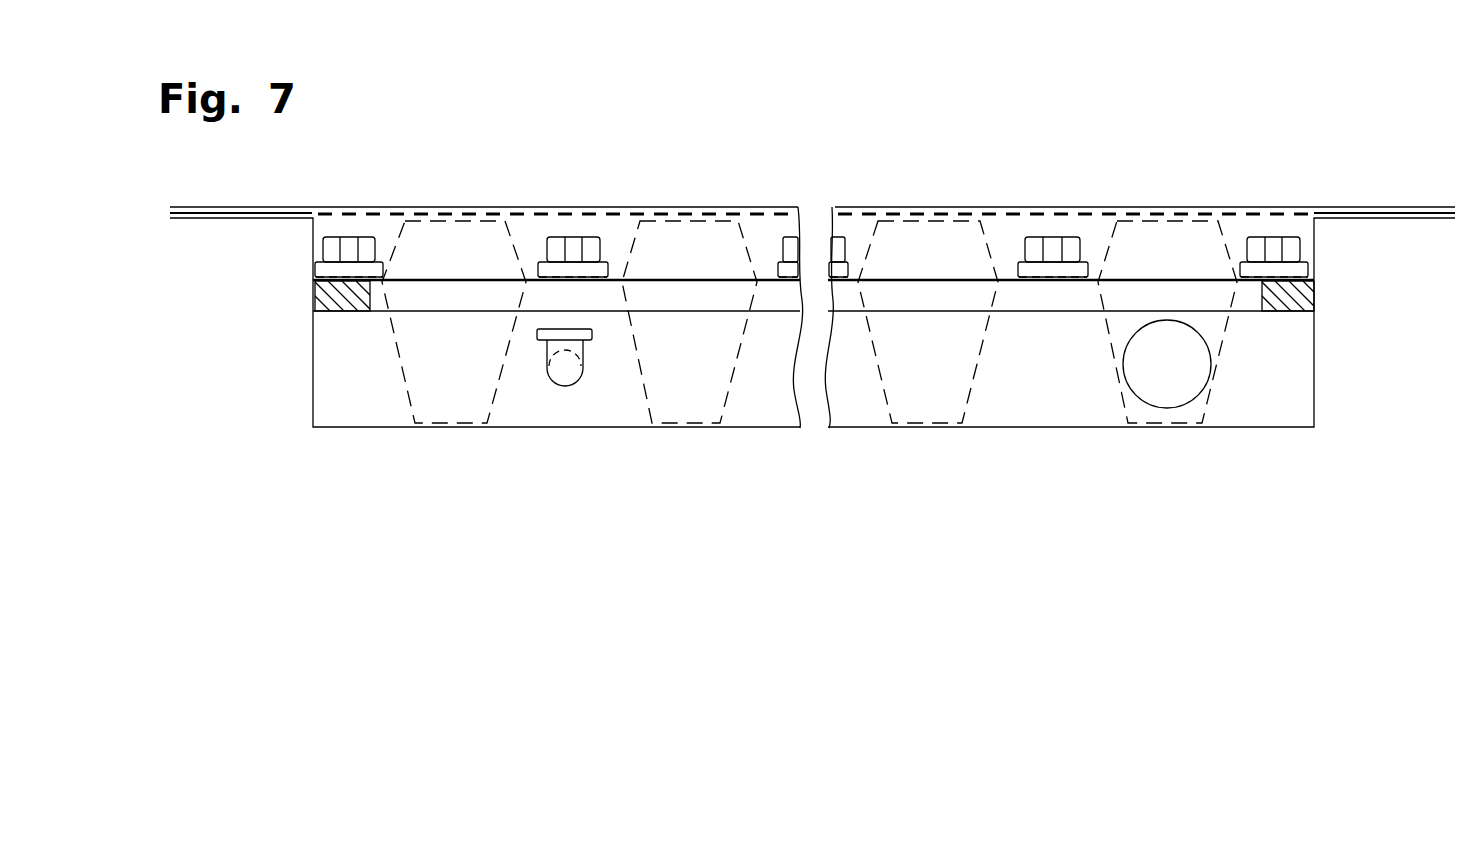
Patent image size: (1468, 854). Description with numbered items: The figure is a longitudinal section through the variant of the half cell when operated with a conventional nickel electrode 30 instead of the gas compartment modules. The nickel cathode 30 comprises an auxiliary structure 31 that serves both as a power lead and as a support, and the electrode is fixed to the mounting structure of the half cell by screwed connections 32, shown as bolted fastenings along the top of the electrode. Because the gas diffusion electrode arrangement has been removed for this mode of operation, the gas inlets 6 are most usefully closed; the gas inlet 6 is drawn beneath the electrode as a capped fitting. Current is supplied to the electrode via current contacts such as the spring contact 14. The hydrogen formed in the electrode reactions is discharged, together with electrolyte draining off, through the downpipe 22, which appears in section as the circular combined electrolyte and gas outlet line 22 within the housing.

The gas inlet 6 is at (568, 378).
The spring contact 14 is at (1066, 207).
The combined electrolyte and gas outlet line 22 is at (1168, 385).
The nickel electrode 30 is at (452, 213).
The auxiliary structure 31 is at (517, 252).
The screwed connection 32 is at (577, 247).